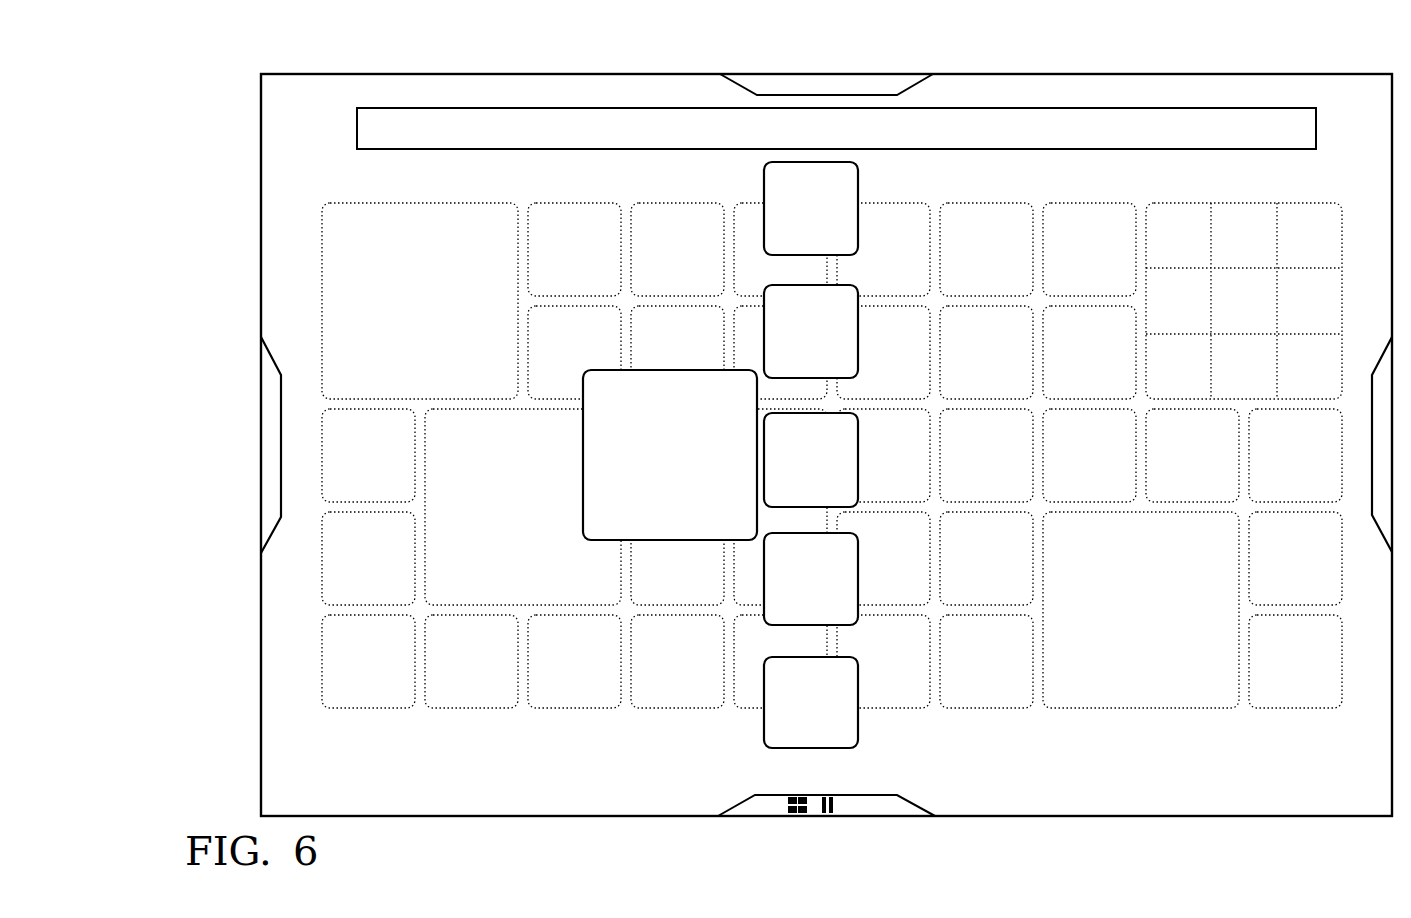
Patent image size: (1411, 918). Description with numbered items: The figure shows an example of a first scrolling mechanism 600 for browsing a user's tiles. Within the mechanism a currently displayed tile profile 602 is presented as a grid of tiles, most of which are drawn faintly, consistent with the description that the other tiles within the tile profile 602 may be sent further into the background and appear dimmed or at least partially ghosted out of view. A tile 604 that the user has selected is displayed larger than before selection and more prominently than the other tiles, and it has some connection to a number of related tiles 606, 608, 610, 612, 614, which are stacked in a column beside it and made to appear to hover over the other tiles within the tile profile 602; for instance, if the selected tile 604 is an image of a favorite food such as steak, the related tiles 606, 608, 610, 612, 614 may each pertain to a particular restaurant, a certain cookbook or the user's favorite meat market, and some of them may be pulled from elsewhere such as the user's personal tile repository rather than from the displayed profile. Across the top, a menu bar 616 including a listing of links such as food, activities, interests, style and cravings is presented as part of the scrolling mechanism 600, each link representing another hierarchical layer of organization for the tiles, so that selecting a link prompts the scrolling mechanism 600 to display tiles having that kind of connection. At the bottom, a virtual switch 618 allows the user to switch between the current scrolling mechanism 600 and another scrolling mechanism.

The first scrolling mechanism 600 is at (349, 69).
The currently displayed tile profile 602 is at (294, 219).
The tile 604 is at (650, 467).
The related tile 606 is at (793, 219).
The related tile 608 is at (793, 344).
The related tile 610 is at (793, 469).
The related tile 612 is at (793, 592).
The related tile 614 is at (793, 714).
The menu bar 616 is at (356, 112).
The virtual switch 618 is at (749, 794).